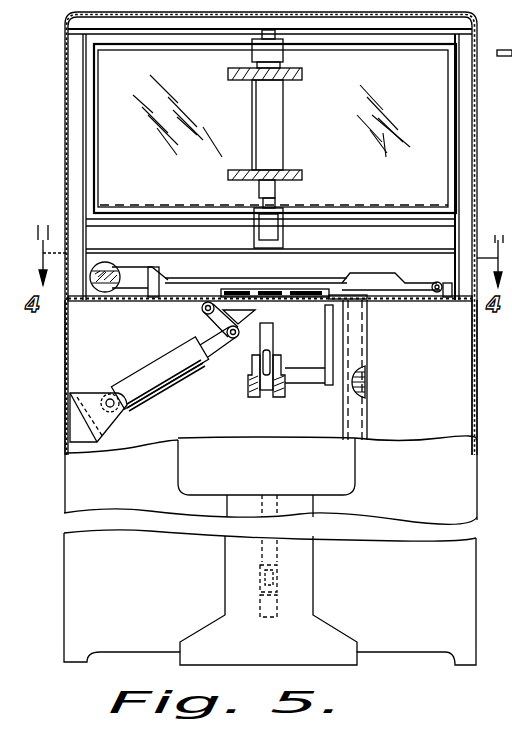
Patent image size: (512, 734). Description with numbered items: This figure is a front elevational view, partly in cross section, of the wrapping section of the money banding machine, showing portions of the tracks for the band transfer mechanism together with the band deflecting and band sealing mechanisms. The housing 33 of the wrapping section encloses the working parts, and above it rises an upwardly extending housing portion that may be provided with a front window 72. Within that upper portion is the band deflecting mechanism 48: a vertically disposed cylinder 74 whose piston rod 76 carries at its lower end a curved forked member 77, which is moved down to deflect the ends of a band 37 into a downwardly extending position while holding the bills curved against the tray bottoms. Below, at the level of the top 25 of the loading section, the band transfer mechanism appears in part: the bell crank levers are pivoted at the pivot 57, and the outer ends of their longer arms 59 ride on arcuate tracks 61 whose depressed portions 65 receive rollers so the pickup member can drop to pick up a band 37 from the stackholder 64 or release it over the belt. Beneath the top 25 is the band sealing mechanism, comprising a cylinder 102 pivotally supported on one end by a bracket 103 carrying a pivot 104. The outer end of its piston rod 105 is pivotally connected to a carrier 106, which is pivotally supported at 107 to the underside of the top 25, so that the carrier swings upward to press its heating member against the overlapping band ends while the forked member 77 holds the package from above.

The top 25 is at (148, 300).
The housing 33 is at (70, 392).
The band 37 is at (370, 379).
The band deflecting mechanism 48 is at (270, 119).
The pivot 57 is at (170, 283).
The longer arm 59 is at (340, 276).
The arcuate track 61 is at (332, 286).
The stackholder 64 is at (355, 348).
The depressed portion 65 is at (504, 80).
The front window 72 is at (432, 168).
The cylinder 74 is at (272, 130).
The piston rod 76 is at (258, 192).
The forked member 77 is at (278, 212).
The cylinder 102 is at (150, 405).
The bracket 103 is at (80, 392).
The pivot 104 is at (112, 408).
The piston rod 105 is at (205, 355).
The carrier 106 is at (276, 323).
The pivot 107 is at (204, 309).